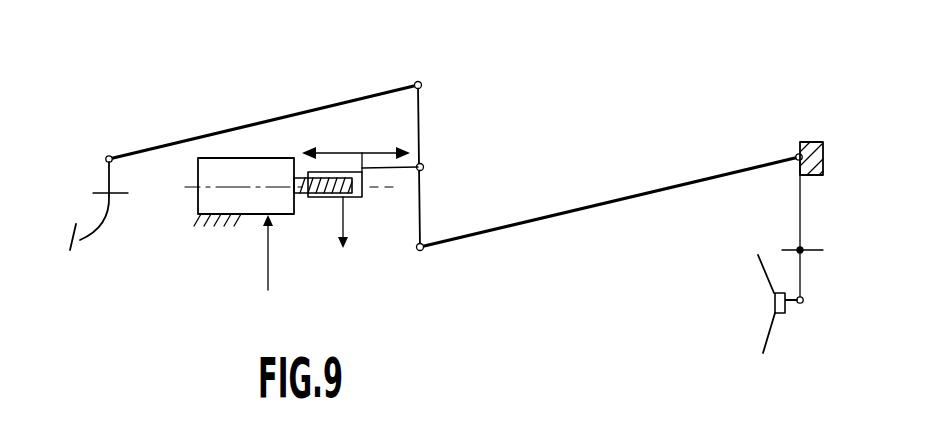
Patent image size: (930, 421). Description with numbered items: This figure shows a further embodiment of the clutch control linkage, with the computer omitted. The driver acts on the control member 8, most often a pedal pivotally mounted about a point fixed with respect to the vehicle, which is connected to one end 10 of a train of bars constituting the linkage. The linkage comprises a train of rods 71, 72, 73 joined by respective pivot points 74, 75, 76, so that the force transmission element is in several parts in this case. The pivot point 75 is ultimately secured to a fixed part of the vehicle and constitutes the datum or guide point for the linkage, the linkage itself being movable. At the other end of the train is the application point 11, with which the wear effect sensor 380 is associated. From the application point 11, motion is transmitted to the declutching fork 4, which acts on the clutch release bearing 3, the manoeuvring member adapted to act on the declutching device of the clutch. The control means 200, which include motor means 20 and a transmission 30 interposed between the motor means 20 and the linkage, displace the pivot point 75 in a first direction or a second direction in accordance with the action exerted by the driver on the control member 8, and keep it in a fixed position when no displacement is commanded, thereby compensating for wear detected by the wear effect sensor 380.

The clutch release bearing 3 is at (780, 313).
The declutching fork 4 is at (786, 188).
The control member 8 is at (95, 241).
The end of the train of bars 10 is at (109, 155).
The application point 11 is at (799, 153).
The motor means 20 is at (248, 224).
The transmission 30 is at (322, 210).
The rod 71 is at (268, 119).
The rod 72 is at (421, 117).
The rod 73 is at (628, 196).
The pivot point 74 is at (418, 81).
The pivot point 75 is at (418, 171).
The pivot point 76 is at (420, 251).
The control means 200 is at (188, 193).
The wear effect sensor 380 is at (834, 152).